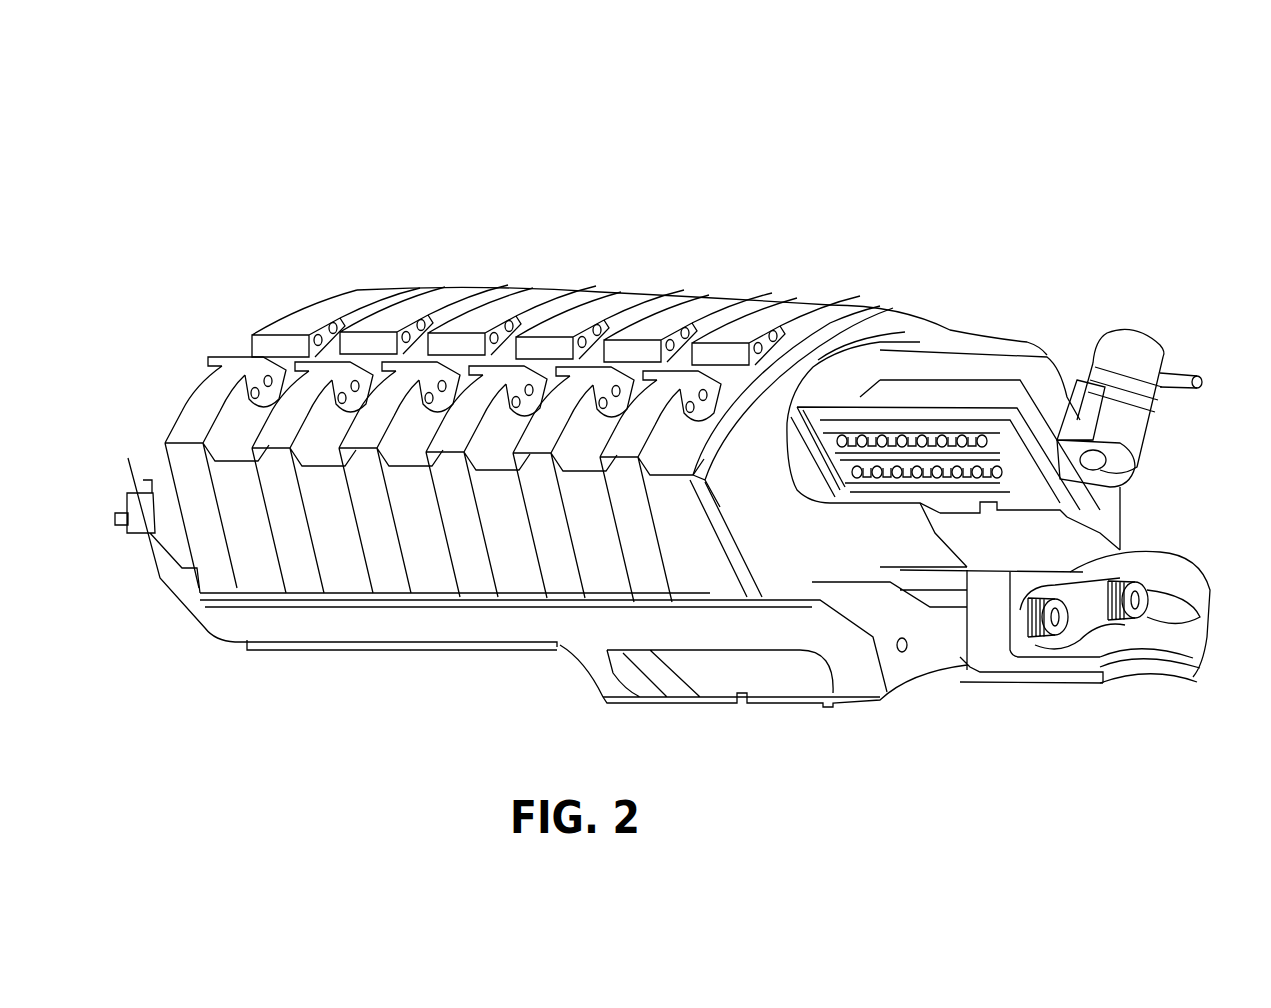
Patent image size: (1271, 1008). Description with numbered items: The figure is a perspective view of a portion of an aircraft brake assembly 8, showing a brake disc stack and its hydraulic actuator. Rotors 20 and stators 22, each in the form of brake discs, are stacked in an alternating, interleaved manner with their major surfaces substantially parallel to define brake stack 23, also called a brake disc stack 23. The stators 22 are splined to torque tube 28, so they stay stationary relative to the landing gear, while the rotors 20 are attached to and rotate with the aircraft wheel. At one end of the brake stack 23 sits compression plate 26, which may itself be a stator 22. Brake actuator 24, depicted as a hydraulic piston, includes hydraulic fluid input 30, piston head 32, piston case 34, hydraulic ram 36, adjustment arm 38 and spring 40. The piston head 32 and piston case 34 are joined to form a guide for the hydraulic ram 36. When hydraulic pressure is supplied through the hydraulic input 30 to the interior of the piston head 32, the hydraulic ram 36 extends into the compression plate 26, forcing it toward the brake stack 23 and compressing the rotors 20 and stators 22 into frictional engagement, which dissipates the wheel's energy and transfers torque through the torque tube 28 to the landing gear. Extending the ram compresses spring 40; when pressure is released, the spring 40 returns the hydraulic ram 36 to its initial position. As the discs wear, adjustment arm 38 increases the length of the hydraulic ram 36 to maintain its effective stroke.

The brake assembly 8 is at (818, 190).
The rotors 20 is at (347, 250).
The stators 22 is at (237, 625).
The brake stack 23 is at (250, 282).
The brake actuator 24 is at (1028, 312).
The compression plate 26 is at (728, 590).
The torque tube 28 is at (210, 622).
The hydraulic fluid input 30 is at (1147, 342).
The piston head 32 is at (921, 362).
The piston case 34 is at (836, 386).
The hydraulic ram 36 is at (848, 418).
The adjustment arm 38 is at (843, 463).
The spring 40 is at (1000, 471).